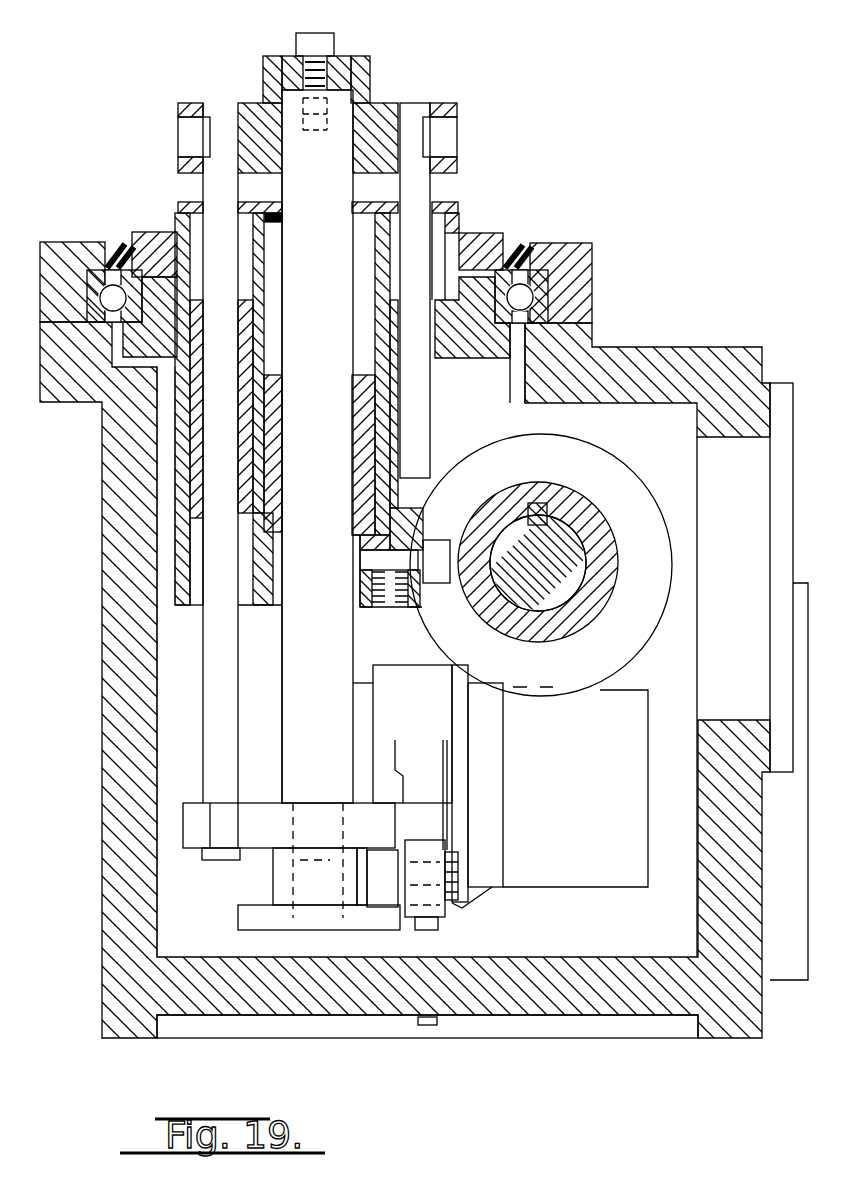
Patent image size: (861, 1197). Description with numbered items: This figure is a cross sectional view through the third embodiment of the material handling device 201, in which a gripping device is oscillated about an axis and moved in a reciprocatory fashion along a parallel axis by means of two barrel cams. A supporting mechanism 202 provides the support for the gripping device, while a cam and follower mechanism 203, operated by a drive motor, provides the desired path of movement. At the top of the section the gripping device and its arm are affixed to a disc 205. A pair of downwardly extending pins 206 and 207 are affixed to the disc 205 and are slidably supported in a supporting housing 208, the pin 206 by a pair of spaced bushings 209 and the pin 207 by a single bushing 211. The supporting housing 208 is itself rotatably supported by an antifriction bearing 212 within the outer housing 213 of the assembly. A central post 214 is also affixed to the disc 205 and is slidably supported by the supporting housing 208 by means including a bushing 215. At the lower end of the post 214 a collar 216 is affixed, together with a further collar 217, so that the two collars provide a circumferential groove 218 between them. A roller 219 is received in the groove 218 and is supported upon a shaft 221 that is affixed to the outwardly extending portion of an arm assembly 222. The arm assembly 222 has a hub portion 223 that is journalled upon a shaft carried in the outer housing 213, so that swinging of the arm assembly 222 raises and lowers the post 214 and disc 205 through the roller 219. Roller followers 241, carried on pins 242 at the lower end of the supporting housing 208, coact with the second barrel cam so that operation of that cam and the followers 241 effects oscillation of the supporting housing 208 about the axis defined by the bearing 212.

The material handling device 201 is at (630, 250).
The supporting mechanism 202 is at (478, 200).
The cam and follower mechanism 203 is at (183, 648).
The disc 205 is at (455, 103).
The pin 206 is at (190, 452).
The pin 207 is at (430, 430).
The supporting housing 208 is at (462, 258).
The bushings 209 is at (178, 213).
The bushing 211 is at (440, 240).
The antifriction bearing 212 is at (548, 292).
The outer housing 213 is at (615, 345).
The central post 214 is at (335, 644).
The bushing 215 is at (243, 480).
The collar 216 is at (190, 825).
The collar 217 is at (240, 912).
The circumferential groove 218 is at (250, 903).
The roller 219 is at (387, 900).
The shaft 221 is at (435, 856).
The arm assembly 222 is at (432, 720).
The hub portion 223 is at (463, 905).
The roller followers 241 is at (445, 563).
The pins 242 is at (402, 540).